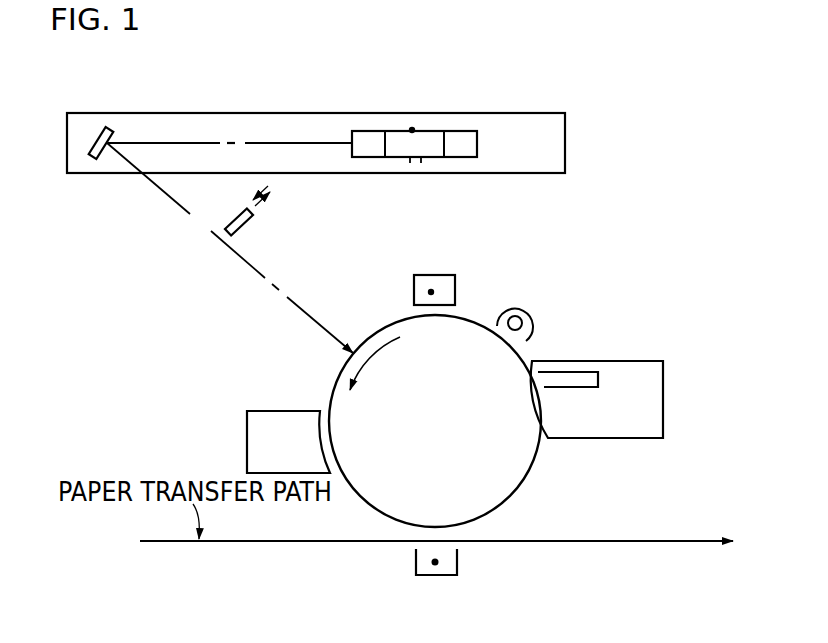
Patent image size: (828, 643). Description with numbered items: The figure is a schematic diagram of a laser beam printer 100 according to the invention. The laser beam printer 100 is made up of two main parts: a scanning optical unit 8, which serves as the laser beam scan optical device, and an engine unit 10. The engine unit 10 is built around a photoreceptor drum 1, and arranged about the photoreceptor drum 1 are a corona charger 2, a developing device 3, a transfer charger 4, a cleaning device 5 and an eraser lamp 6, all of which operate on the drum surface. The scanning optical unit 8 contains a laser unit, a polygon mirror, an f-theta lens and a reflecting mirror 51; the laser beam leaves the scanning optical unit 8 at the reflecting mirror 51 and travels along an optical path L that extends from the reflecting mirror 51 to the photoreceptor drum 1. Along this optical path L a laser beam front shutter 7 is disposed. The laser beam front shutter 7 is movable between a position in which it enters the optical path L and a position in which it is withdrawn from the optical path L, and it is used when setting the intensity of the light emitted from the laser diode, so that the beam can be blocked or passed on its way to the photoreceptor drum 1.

The photoreceptor drum 1 is at (508, 457).
The corona charger 2 is at (434, 275).
The developing device 3 is at (270, 411).
The transfer charger 4 is at (462, 561).
The cleaning device 5 is at (588, 367).
The eraser lamp 6 is at (540, 312).
The laser beam front shutter 7 is at (231, 218).
The scanning optical unit 8 is at (540, 137).
The engine unit 10 is at (517, 268).
The reflecting mirror 51 is at (94, 139).
The laser beam printer 100 is at (420, 103).
The optical path L is at (266, 280).